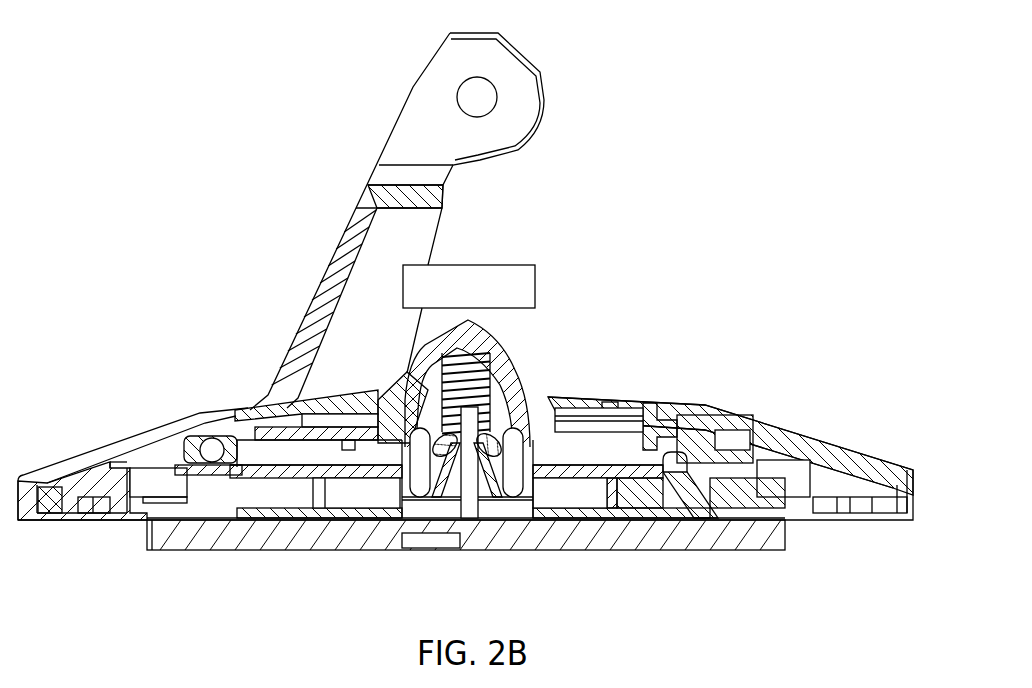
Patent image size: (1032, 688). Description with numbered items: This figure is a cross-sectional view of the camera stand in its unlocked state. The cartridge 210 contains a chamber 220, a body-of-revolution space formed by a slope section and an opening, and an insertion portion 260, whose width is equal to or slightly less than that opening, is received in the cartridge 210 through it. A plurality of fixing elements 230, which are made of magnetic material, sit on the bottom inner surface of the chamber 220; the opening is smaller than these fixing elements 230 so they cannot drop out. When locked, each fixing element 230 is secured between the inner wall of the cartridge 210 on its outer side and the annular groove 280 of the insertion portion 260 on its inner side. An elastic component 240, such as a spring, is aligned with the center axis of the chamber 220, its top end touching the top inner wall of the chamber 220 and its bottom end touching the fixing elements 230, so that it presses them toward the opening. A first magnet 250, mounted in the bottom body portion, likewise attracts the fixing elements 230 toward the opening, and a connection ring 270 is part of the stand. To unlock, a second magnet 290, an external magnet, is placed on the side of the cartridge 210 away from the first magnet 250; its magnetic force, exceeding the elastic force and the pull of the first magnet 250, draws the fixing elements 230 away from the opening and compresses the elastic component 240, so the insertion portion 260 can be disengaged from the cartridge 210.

The cartridge 210 is at (492, 341).
The chamber 220 is at (535, 400).
The fixing elements 230 is at (440, 483).
The elastic component 240 is at (512, 370).
The first magnet 250 is at (358, 497).
The insertion portion 260 is at (438, 410).
The connection ring 270 is at (700, 412).
The groove 280 is at (480, 517).
The second magnet 290 is at (535, 290).